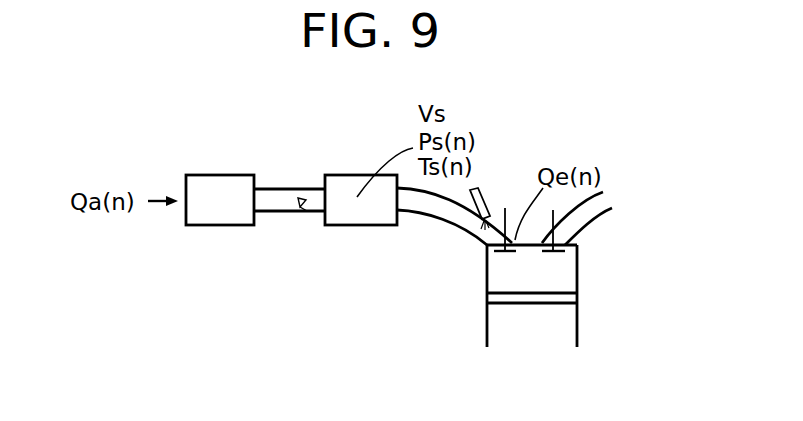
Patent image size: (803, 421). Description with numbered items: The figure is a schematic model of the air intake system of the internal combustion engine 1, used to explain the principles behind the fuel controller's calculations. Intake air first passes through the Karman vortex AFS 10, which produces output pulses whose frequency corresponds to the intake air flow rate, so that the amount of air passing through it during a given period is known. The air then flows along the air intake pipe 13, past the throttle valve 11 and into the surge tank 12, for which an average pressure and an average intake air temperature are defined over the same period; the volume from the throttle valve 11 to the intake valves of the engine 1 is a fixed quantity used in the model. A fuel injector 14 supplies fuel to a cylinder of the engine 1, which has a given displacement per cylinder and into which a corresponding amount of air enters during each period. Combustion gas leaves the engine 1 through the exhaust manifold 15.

The internal combustion engine 1 is at (577, 285).
The Karman vortex AFS 10 is at (217, 227).
The throttle valve 11 is at (308, 212).
The surge tank 12 is at (360, 227).
The air intake pipe 13 is at (447, 218).
The fuel injector 14 is at (483, 200).
The exhaust manifold 15 is at (583, 227).